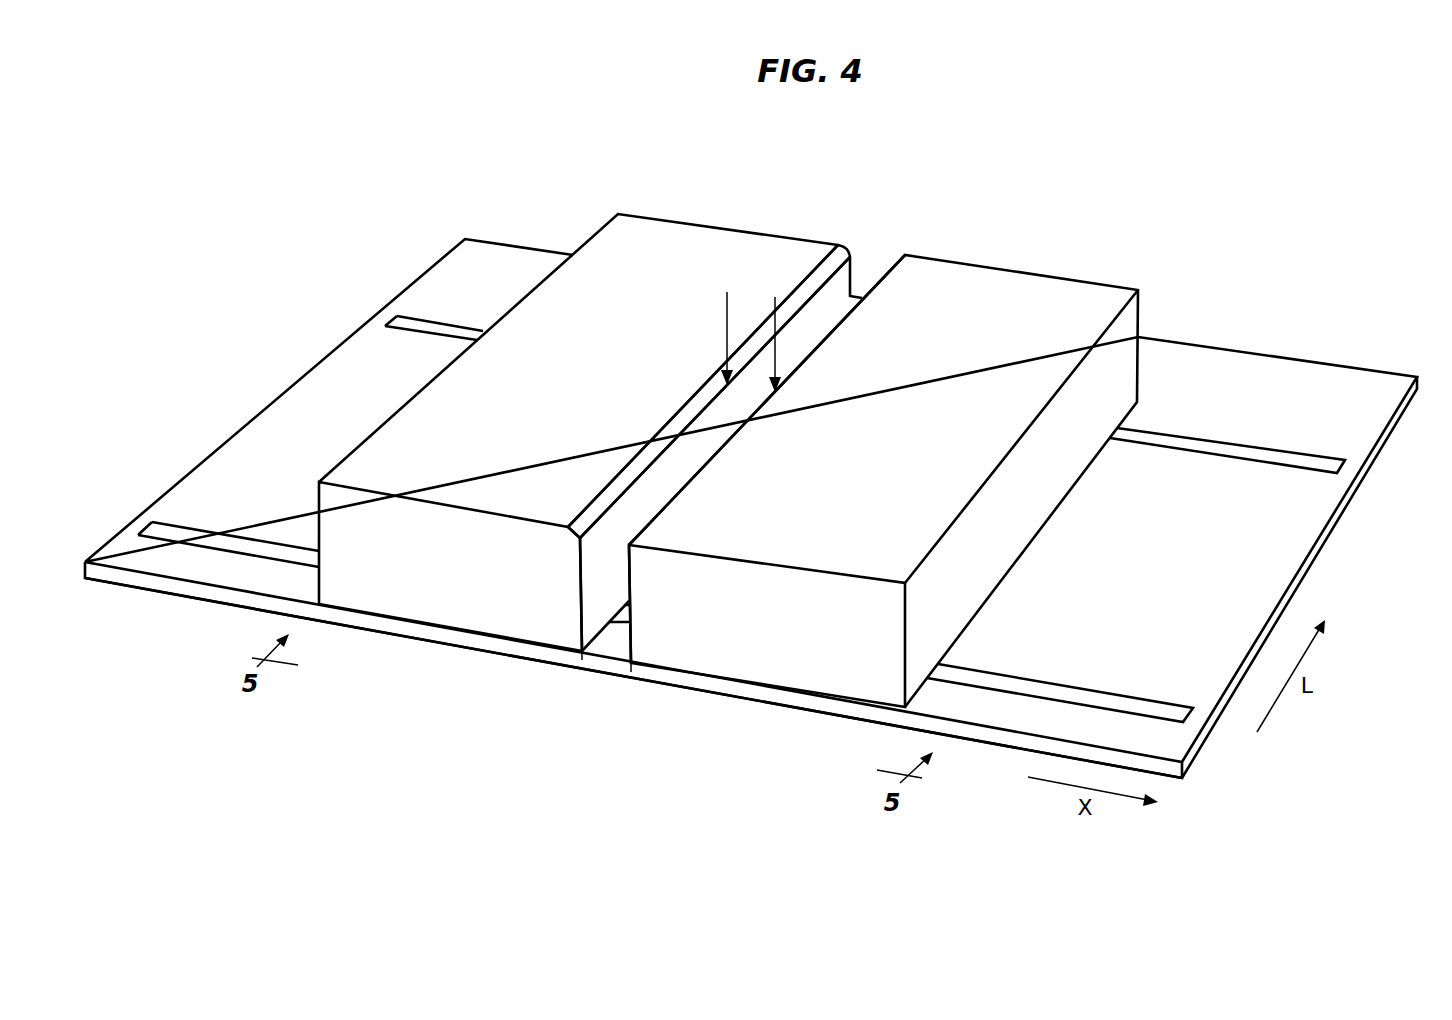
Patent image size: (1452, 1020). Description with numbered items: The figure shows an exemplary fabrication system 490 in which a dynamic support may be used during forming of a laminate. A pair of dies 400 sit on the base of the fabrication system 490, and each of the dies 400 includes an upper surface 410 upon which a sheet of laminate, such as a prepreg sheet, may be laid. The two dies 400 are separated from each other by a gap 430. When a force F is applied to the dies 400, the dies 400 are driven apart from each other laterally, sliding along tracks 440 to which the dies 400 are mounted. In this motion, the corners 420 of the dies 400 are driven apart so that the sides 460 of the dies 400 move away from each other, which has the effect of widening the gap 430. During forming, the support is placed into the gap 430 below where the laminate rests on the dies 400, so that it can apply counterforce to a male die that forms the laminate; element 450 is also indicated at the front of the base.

The dies 400 is at (728, 430).
The upper surfaces 410 is at (626, 330).
The corners 420 is at (582, 523).
The gap 430 is at (573, 676).
The tracks 440 is at (1245, 447).
The bottom surface of base 450 is at (177, 632).
The sides 460 is at (580, 587).
The fabrication system 490 is at (751, 508).